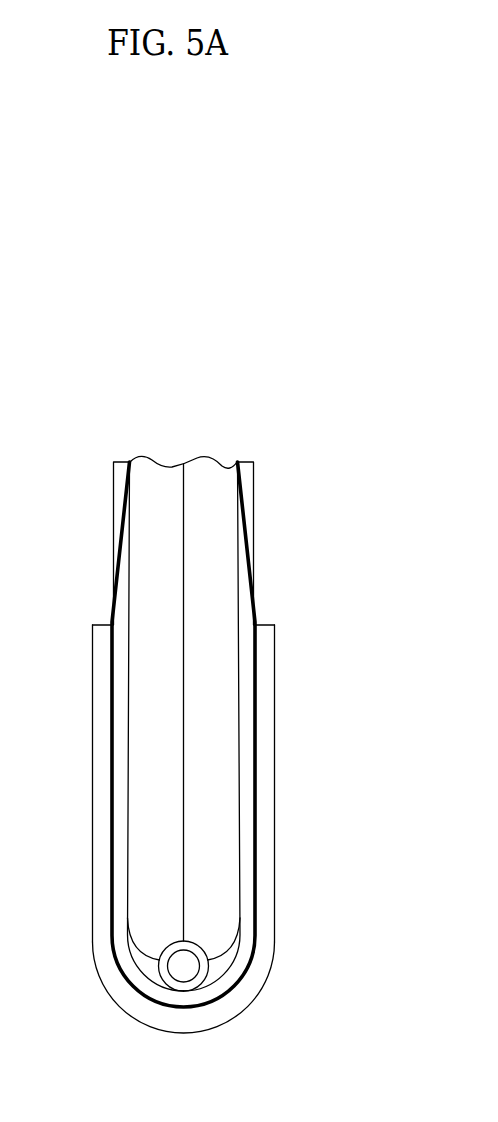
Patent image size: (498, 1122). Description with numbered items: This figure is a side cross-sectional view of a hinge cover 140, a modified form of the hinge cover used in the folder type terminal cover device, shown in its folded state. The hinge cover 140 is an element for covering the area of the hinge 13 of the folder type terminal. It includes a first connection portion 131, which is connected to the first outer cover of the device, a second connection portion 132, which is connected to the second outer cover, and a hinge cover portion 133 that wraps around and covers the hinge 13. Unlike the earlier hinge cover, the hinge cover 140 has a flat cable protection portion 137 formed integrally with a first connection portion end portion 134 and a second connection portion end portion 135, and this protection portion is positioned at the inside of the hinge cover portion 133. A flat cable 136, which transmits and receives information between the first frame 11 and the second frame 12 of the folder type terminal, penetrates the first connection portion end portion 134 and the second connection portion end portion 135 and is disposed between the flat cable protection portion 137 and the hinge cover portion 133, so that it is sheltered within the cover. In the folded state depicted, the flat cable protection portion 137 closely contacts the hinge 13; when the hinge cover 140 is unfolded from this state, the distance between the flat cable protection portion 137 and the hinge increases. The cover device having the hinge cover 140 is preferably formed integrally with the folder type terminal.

The hinge cover 140 is at (345, 358).
The first frame 11 is at (212, 472).
The second frame 12 is at (161, 472).
The hinge 13 is at (182, 968).
The first connection portion 131 is at (275, 828).
The second connection portion 132 is at (92, 828).
The hinge cover portion 133 is at (186, 1023).
The first connection portion end portion 134 is at (254, 503).
The second connection portion end portion 135 is at (114, 500).
The flat cable 136 is at (126, 479).
The flat cable protection portion 137 is at (227, 977).